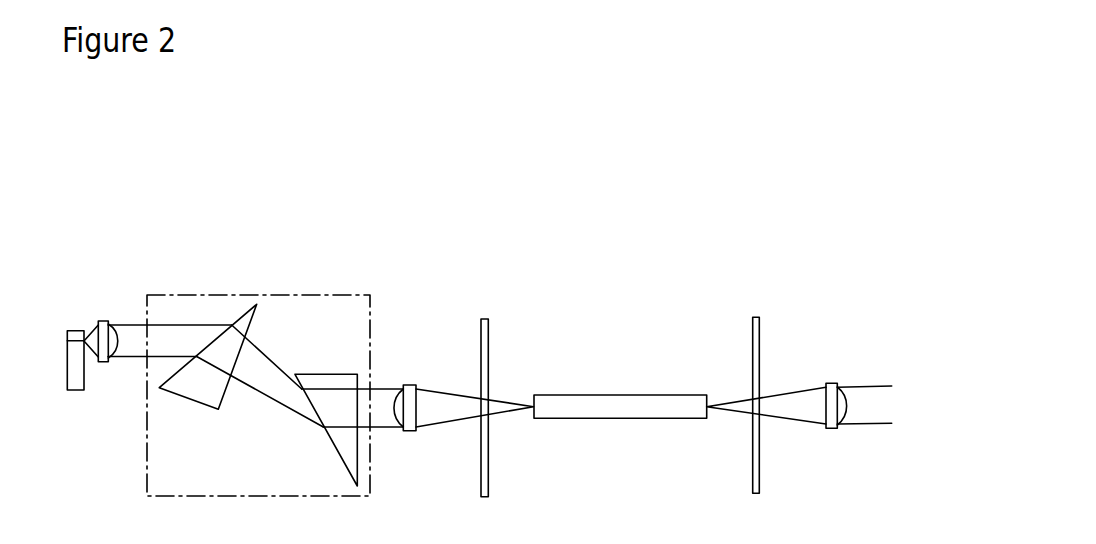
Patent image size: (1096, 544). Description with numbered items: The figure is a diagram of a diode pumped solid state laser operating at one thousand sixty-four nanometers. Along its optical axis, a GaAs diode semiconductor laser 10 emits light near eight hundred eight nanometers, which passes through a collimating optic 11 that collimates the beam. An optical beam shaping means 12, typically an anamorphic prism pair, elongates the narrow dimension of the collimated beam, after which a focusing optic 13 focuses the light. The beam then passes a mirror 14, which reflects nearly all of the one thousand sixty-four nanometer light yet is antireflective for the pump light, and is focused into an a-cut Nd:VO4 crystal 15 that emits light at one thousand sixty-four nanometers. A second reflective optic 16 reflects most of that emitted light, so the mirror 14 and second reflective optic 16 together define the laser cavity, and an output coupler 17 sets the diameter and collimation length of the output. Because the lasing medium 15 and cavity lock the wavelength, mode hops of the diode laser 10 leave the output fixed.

The GaAs diode semiconductor laser 10 is at (76, 330).
The collimating optic 11 is at (100, 320).
The optical beam shaping means 12 is at (256, 295).
The focusing optic 13 is at (411, 384).
The mirror 14 is at (486, 319).
The a-cut Nd:VO4 crystal 15 is at (613, 395).
The second reflective optic 16 is at (752, 317).
The output coupler 17 is at (832, 383).